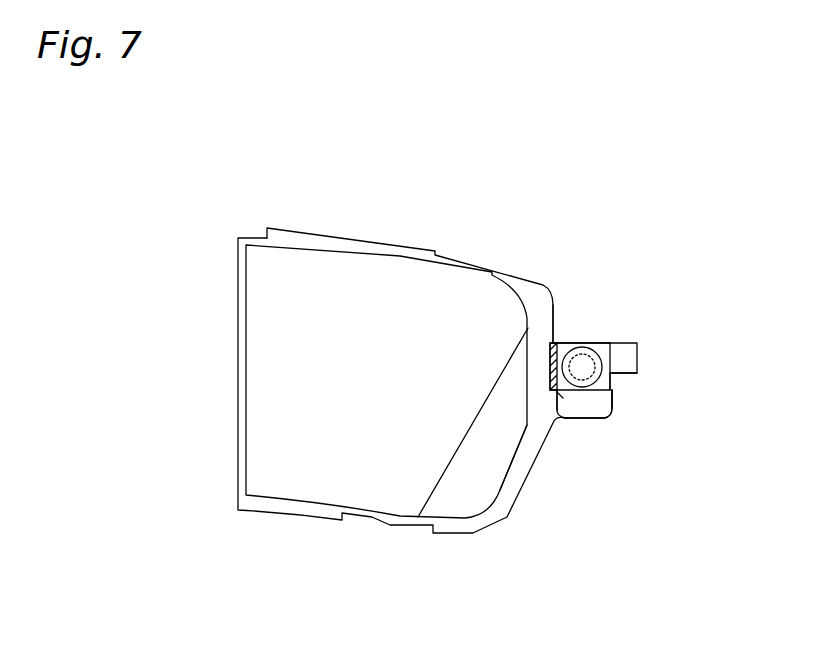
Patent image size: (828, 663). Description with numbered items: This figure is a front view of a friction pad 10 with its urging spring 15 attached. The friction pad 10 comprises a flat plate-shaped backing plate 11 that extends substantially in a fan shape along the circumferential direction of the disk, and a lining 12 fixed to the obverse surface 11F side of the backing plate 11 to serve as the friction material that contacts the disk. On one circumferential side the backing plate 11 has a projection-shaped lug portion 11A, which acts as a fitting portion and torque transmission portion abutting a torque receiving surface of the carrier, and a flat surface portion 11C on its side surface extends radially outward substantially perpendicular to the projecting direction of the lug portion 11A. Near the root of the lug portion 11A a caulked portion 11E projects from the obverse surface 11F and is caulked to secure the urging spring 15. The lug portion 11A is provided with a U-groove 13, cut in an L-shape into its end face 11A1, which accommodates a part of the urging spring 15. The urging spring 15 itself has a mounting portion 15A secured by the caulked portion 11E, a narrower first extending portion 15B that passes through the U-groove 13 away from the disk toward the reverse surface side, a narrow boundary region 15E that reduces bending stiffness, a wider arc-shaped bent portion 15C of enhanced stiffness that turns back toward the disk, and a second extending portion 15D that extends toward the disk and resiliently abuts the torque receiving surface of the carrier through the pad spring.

The friction pad 10 is at (285, 230).
The backing plate 11 is at (474, 527).
The lining 12 is at (302, 386).
The lug portion 11A is at (585, 423).
The end face of the lug portion 11A1 is at (612, 404).
The flat surface portion 11C is at (556, 333).
The caulked portion 11E is at (591, 347).
The obverse surface 11F is at (543, 398).
The U-groove 13 is at (618, 381).
The urging spring 15 is at (629, 341).
The mounting portion 15A is at (562, 398).
The first extending portion 15B is at (613, 343).
The bent portion 15C is at (625, 374).
The second extending portion 15D is at (639, 356).
The boundary region 15E is at (549, 372).